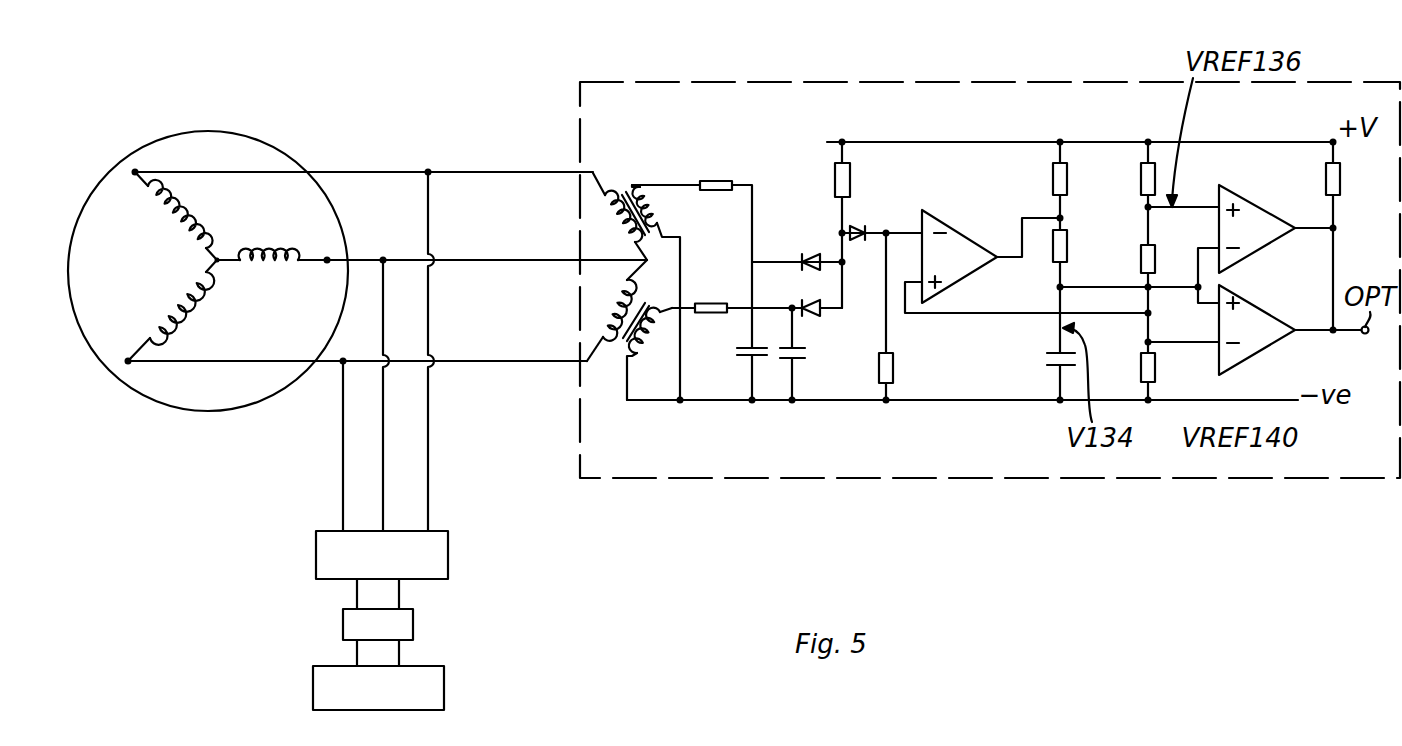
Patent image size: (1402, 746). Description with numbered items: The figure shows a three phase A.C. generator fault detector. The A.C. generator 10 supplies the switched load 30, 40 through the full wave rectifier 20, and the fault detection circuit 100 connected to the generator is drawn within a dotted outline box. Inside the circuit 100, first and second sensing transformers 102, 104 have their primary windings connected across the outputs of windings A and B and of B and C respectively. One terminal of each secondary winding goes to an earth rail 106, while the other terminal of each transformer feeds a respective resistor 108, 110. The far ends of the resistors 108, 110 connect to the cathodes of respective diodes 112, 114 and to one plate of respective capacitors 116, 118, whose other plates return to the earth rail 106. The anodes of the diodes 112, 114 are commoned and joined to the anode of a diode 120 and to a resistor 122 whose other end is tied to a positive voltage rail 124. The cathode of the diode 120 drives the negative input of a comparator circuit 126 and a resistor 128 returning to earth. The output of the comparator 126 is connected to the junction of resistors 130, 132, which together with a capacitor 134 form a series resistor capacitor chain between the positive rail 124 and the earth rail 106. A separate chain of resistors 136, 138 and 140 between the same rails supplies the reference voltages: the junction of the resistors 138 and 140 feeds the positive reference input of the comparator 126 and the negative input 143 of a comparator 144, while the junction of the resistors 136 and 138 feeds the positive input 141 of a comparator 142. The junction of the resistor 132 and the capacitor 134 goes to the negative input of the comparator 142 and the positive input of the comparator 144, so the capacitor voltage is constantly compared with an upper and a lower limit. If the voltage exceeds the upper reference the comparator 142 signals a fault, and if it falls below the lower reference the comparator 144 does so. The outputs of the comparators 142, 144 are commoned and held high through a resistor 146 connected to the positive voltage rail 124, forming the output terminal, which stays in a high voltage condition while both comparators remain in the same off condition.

The A.C. generator 10 is at (284, 149).
The full wave rectifier 20 is at (438, 553).
The switched load 30 is at (433, 687).
The switched load 40 is at (405, 626).
The fault detection circuit 100 is at (965, 80).
The first sensing transformer 102 is at (658, 220).
The second sensing transformer 104 is at (650, 343).
The earth rail 106 is at (1003, 402).
The resistor 108 is at (713, 178).
The resistor 110 is at (710, 300).
The diode 112 is at (813, 252).
The diode 114 is at (815, 318).
The capacitor 116 is at (740, 353).
The capacitor 118 is at (803, 367).
The diode 120 is at (858, 225).
The resistor 122 is at (852, 172).
The positive voltage rail 124 is at (1012, 140).
The comparator circuit 126 is at (965, 237).
The resistor 128 is at (892, 360).
The resistor 130 is at (1067, 173).
The resistor 132 is at (1068, 247).
The capacitor 134 is at (1046, 357).
The resistor 136 is at (1140, 180).
The resistor 138 is at (1140, 260).
The resistor 140 is at (1142, 358).
The positive input 141 is at (1200, 200).
The comparator 142 is at (1262, 215).
The negative input 143 is at (1183, 340).
The comparator 144 is at (1262, 317).
The resistor 146 is at (1337, 190).